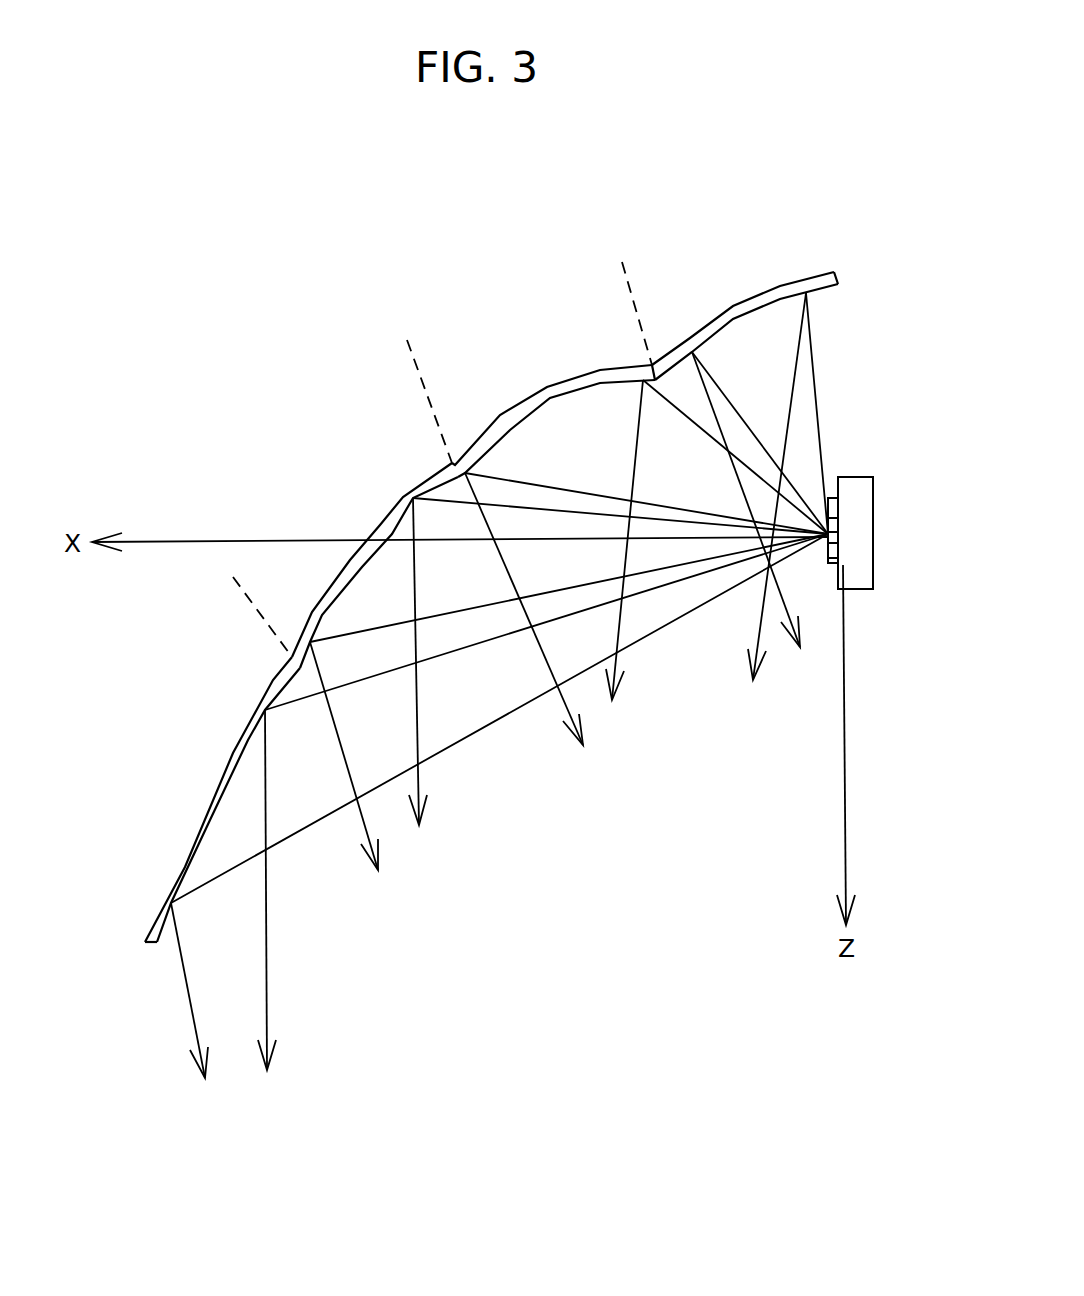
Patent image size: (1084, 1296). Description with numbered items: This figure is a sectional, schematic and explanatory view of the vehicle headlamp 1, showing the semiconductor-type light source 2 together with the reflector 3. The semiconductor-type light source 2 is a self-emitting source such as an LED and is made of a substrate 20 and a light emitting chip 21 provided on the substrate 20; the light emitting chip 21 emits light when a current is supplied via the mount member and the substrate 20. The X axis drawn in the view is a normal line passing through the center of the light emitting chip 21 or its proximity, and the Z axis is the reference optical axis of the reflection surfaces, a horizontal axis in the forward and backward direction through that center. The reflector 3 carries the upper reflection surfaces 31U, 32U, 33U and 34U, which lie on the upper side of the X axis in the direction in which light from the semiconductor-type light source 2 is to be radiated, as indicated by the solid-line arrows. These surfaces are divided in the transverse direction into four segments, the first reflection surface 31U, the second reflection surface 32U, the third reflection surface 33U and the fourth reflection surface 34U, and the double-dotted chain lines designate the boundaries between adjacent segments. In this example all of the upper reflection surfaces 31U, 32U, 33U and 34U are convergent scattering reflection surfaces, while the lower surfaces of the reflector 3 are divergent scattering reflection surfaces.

The vehicle headlamp 1 is at (342, 360).
The semiconductor-type light source 2 is at (847, 457).
The substrate 20 is at (858, 492).
The light emitting chip 21 is at (830, 565).
The reflector 3 is at (168, 873).
The first upper reflection surface 31U is at (740, 322).
The second upper reflection surface 32U is at (537, 408).
The third upper reflection surface 33U is at (350, 565).
The fourth upper reflection surface 34U is at (228, 768).